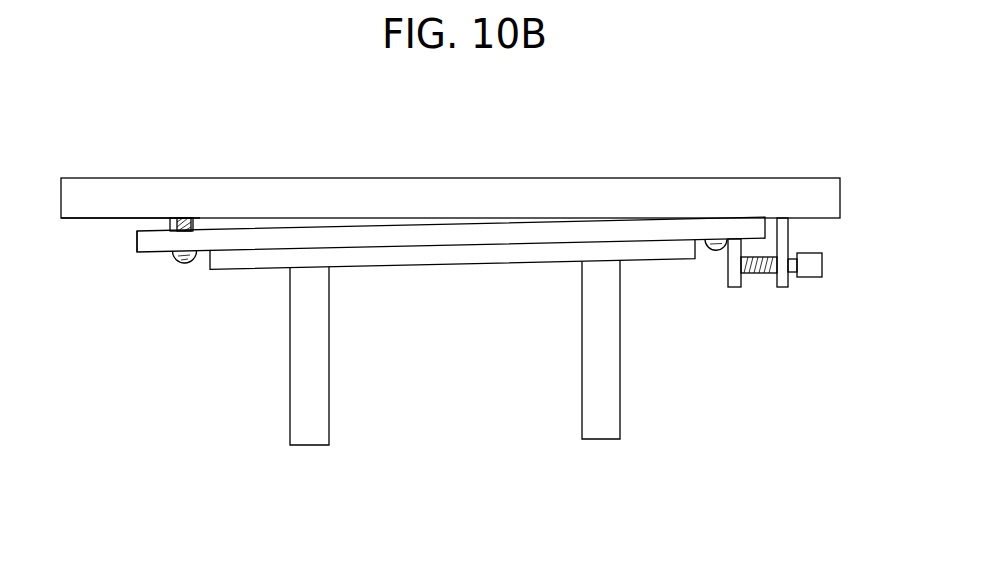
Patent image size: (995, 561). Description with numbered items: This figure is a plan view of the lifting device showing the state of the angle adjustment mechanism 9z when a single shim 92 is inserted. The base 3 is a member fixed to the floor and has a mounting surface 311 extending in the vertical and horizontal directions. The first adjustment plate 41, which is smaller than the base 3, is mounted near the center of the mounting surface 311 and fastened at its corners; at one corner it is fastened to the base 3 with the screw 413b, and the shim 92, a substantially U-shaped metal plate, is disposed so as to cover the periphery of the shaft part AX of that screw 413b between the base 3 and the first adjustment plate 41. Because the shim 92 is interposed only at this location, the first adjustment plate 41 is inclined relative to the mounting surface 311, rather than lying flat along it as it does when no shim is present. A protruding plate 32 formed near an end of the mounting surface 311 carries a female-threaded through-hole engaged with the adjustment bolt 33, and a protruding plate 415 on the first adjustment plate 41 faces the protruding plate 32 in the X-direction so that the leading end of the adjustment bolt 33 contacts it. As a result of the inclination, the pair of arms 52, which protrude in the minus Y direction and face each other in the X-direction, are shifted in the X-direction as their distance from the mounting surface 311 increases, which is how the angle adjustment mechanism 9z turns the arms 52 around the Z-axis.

The base 3 is at (663, 200).
The mounting surface 311 is at (82, 219).
The first adjustment plate 41 is at (468, 235).
The angle adjustment mechanism 9z is at (121, 232).
The shim 92 is at (203, 222).
The shaft part AX is at (183, 226).
The screw 413b is at (184, 263).
The protruding plate 415 is at (733, 288).
The protruding plate 32 is at (782, 288).
The adjustment bolt 33 is at (810, 278).
The arms 52 is at (303, 420).